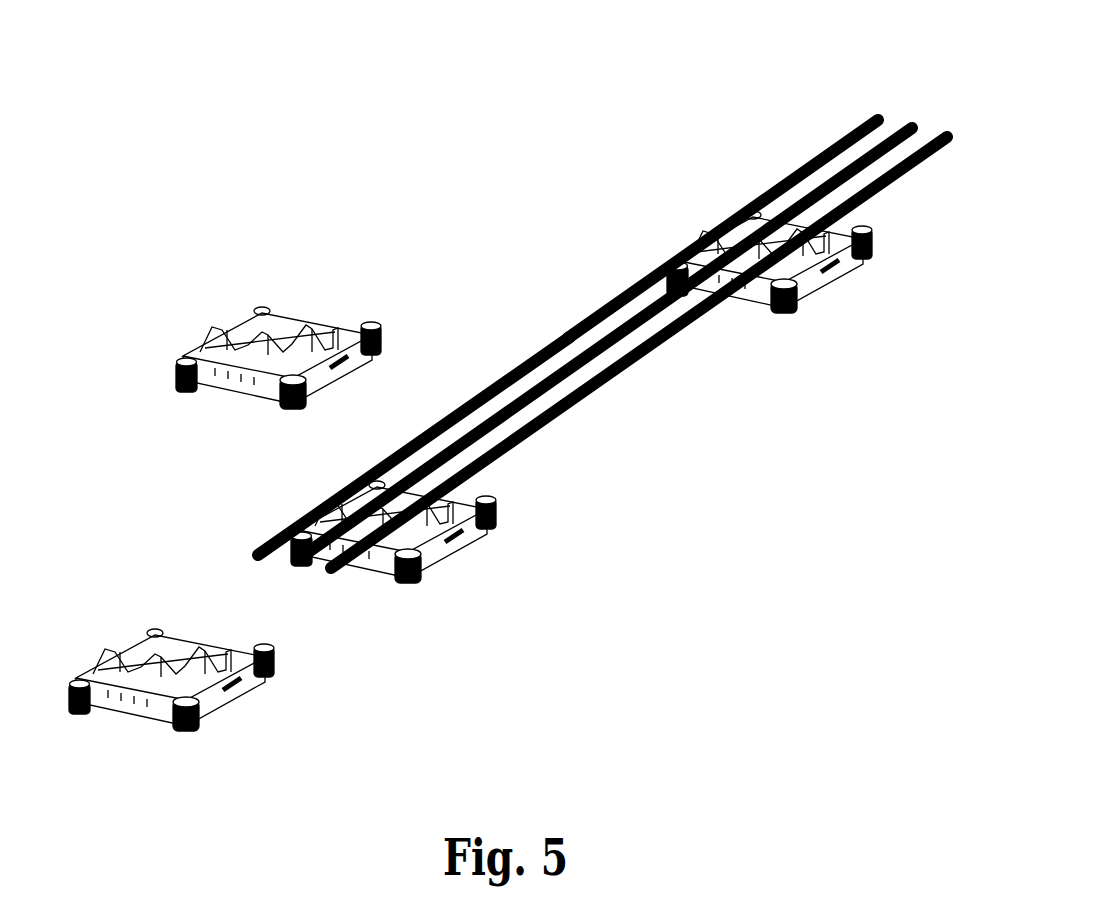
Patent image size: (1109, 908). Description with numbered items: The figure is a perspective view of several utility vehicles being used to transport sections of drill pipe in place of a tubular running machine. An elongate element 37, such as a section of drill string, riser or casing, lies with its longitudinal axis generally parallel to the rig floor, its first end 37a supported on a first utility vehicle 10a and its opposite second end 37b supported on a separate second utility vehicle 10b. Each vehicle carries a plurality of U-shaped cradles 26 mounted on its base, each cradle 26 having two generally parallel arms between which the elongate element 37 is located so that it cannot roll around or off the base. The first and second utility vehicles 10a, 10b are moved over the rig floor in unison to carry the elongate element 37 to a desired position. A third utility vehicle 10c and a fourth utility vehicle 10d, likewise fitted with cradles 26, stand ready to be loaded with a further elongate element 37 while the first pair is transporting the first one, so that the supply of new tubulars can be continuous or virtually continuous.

The first utility vehicle 10a is at (814, 308).
The second utility vehicle 10b is at (478, 546).
The third utility vehicle 10c is at (104, 630).
The fourth utility vehicle 10d is at (212, 318).
The U-shaped cradle 26 is at (330, 335).
The elongate element 37 is at (562, 320).
The first end of elongate element 37a is at (853, 128).
The second end of elongate element 37b is at (266, 553).